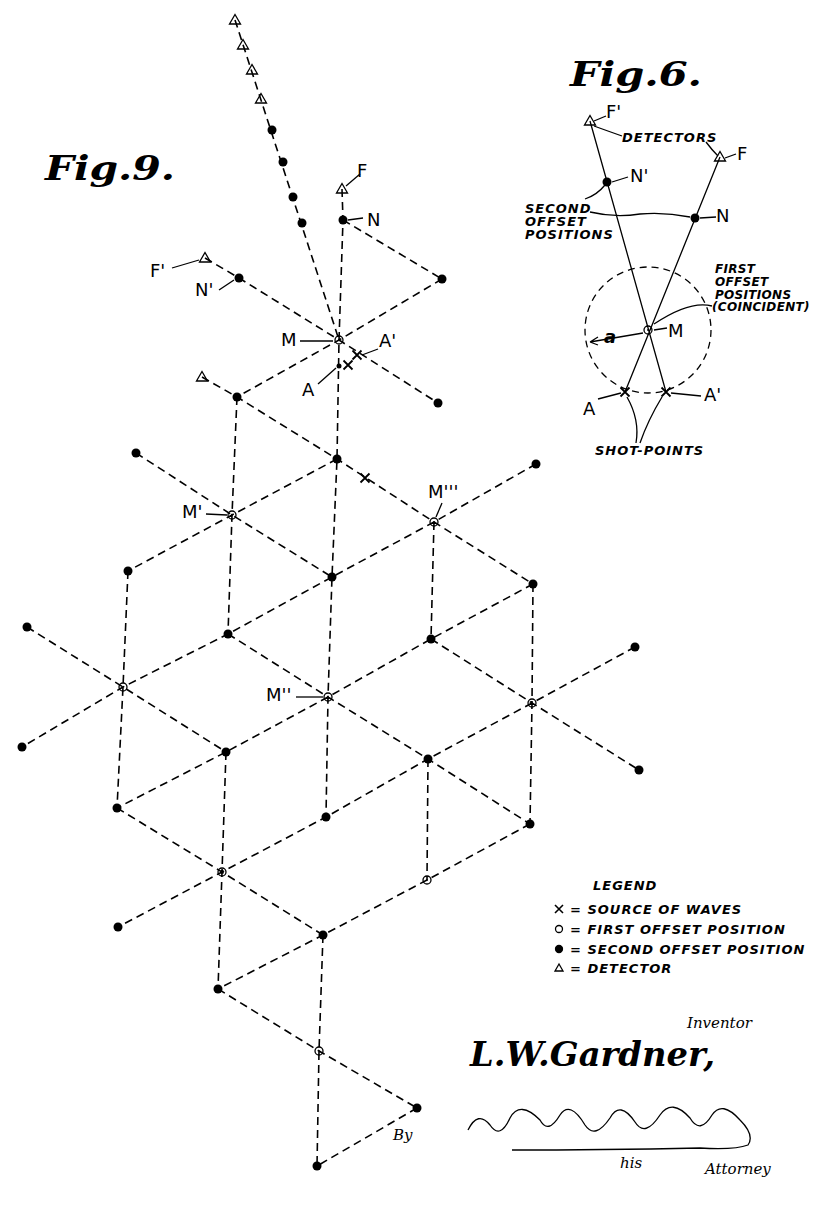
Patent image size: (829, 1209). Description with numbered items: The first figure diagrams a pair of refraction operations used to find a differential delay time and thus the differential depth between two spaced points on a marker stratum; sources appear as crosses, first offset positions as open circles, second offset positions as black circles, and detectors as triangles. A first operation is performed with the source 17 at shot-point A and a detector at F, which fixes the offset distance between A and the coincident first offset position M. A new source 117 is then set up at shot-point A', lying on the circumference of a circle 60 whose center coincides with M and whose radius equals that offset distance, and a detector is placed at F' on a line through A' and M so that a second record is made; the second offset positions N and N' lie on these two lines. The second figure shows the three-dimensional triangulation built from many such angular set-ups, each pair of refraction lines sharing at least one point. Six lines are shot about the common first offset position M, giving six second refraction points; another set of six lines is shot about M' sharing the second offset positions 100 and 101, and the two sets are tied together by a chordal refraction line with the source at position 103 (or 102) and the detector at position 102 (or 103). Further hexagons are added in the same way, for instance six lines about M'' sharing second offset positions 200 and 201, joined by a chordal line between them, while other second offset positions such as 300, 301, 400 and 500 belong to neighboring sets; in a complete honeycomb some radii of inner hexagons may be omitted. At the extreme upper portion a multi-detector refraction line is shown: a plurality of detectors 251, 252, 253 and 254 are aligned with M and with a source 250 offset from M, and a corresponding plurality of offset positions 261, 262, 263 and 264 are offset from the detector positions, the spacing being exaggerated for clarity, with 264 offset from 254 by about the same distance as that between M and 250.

In FIG. 9, the detector 254 is at (229, 20).
In FIG. 9, the detector 253 is at (250, 44).
In FIG. 9, the detector 252 is at (246, 69).
In FIG. 9, the detector 251 is at (267, 96).
In FIG. 9, the offset position 264 is at (268, 131).
In FIG. 9, the offset position 263 is at (287, 159).
In FIG. 9, the offset position 262 is at (289, 197).
In FIG. 9, the offset position 261 is at (298, 224).
In FIG. 9, the source position 103 is at (198, 378).
In FIG. 9, the second offset position 100 is at (239, 394).
In FIG. 9, the second offset position 101 is at (343, 458).
In FIG. 9, the detector position 102 is at (361, 481).
In FIG. 9, the source 250 is at (350, 369).
In FIG. 9, the second offset position 500 is at (438, 408).
In FIG. 9, the second offset position 400 is at (537, 469).
In FIG. 9, the second offset position 201 is at (334, 573).
In FIG. 9, the second offset position 301 is at (535, 581).
In FIG. 9, the second offset position 200 is at (225, 633).
In FIG. 9, the second offset position 300 is at (430, 643).
In FIG. 6, the circle 60 is at (711, 358).
In FIG. 6, the source 17 is at (621, 397).
In FIG. 6, the new source 117 is at (669, 398).